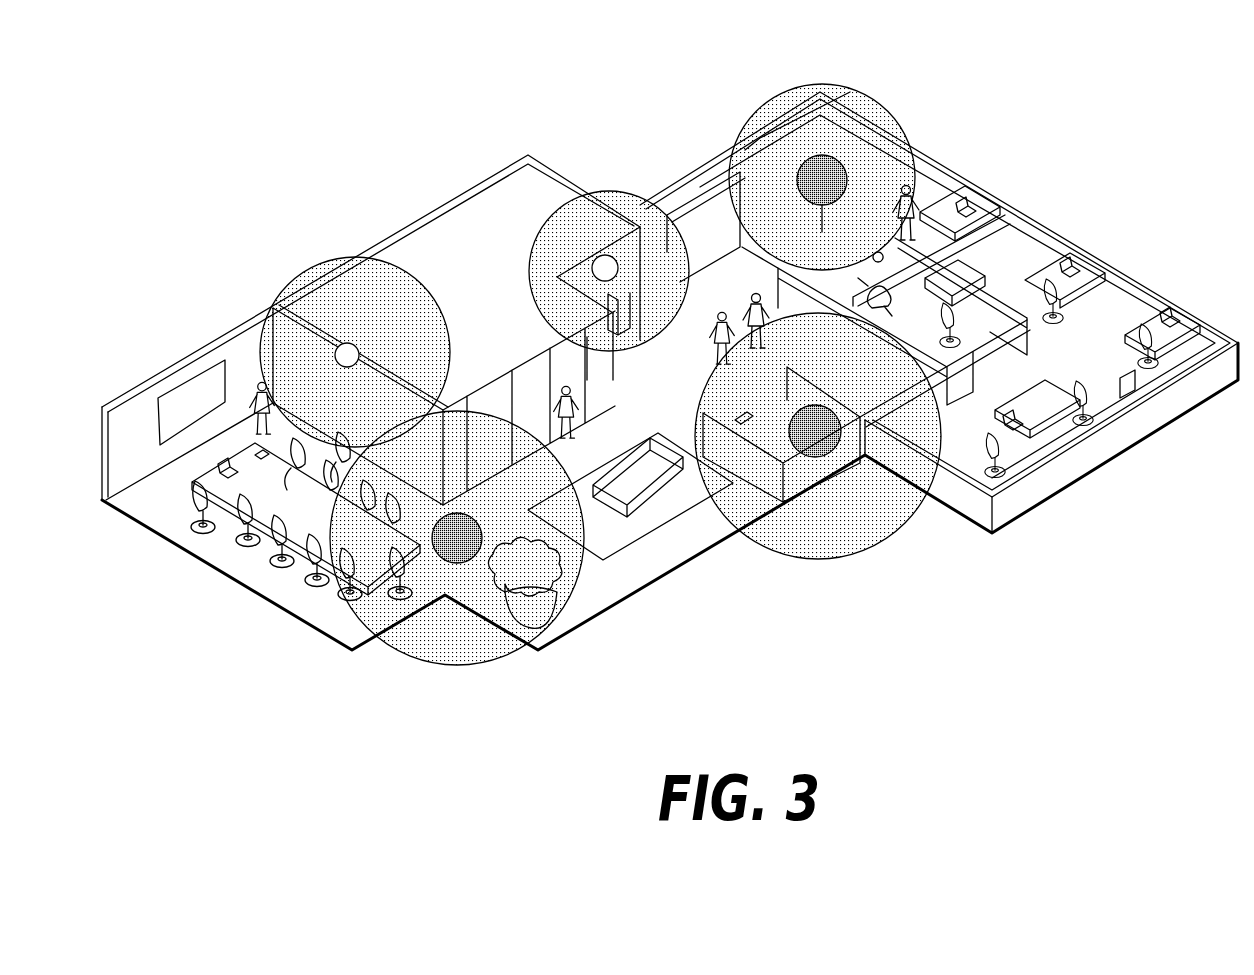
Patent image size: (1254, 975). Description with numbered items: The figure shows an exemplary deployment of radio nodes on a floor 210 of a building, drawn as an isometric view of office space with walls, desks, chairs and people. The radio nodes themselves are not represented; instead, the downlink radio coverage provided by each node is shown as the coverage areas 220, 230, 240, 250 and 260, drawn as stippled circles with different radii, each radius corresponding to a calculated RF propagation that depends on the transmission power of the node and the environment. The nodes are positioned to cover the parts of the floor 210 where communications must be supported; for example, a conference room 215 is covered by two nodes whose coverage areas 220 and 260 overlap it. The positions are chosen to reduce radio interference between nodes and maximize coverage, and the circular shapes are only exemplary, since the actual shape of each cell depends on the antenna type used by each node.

The floor 210 is at (396, 150).
The conference room 215 is at (254, 567).
The coverage area 220 is at (320, 270).
The coverage area 230 is at (614, 196).
The coverage area 240 is at (773, 109).
The coverage area 250 is at (838, 534).
The coverage area 260 is at (453, 651).